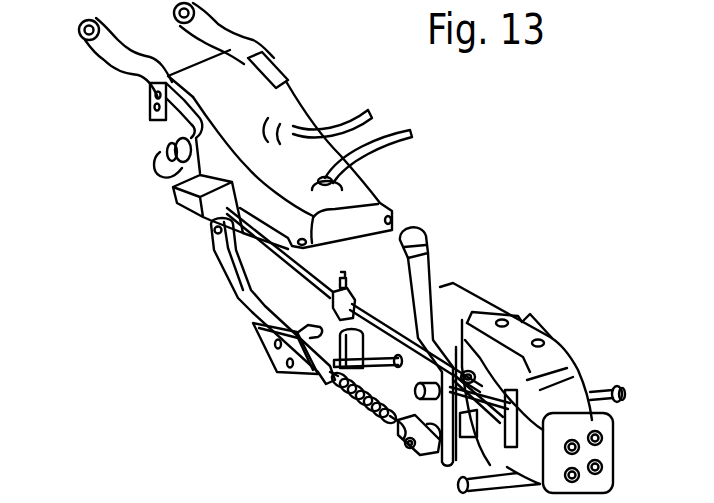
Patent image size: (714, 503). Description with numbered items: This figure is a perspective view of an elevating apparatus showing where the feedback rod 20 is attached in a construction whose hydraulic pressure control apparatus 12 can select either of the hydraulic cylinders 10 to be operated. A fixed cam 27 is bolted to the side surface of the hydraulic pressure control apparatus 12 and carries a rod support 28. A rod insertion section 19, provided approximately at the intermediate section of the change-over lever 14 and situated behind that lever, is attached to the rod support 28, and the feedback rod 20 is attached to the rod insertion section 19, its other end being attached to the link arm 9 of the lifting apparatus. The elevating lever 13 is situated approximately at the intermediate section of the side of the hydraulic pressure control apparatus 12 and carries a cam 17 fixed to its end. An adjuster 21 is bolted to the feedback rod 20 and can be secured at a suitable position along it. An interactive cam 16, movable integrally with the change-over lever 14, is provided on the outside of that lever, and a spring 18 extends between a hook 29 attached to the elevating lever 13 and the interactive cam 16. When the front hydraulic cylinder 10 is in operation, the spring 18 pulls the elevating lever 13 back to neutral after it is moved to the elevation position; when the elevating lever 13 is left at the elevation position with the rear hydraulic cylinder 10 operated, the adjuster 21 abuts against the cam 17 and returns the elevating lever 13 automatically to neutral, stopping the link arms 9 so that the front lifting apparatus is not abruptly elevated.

The link arm 9 is at (140, 78).
The hydraulic cylinder 10 is at (267, 97).
The hydraulic pressure control apparatus 12 is at (565, 355).
The elevating lever 13 is at (230, 278).
The change-over lever 14 is at (426, 242).
The interactive cam 16 is at (420, 452).
The cam 17 is at (297, 378).
The spring 18 is at (358, 402).
The rod insertion section 19 is at (460, 337).
The feedback rod 20 is at (313, 280).
The adjuster 21 is at (354, 294).
The fixed cam 27 is at (580, 386).
The rod support 28 is at (458, 375).
The hook 29 is at (312, 325).